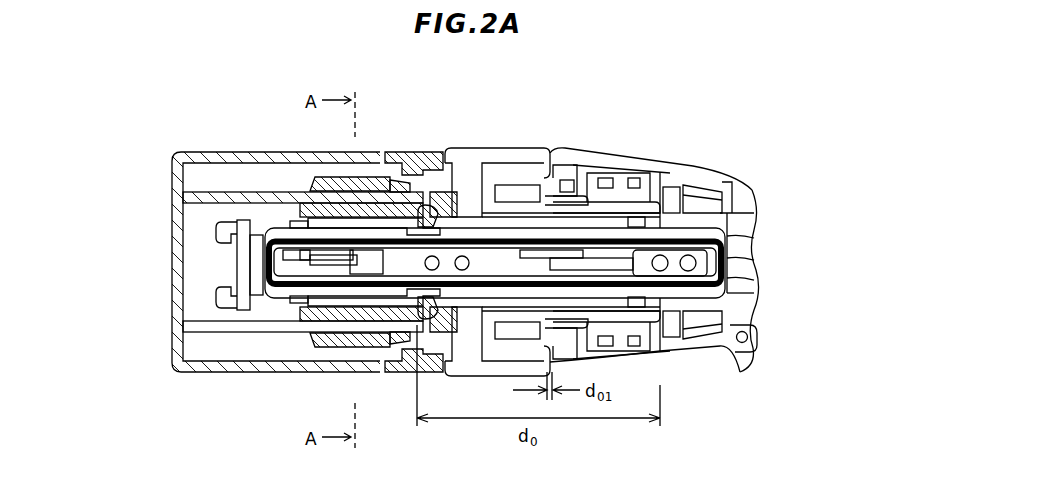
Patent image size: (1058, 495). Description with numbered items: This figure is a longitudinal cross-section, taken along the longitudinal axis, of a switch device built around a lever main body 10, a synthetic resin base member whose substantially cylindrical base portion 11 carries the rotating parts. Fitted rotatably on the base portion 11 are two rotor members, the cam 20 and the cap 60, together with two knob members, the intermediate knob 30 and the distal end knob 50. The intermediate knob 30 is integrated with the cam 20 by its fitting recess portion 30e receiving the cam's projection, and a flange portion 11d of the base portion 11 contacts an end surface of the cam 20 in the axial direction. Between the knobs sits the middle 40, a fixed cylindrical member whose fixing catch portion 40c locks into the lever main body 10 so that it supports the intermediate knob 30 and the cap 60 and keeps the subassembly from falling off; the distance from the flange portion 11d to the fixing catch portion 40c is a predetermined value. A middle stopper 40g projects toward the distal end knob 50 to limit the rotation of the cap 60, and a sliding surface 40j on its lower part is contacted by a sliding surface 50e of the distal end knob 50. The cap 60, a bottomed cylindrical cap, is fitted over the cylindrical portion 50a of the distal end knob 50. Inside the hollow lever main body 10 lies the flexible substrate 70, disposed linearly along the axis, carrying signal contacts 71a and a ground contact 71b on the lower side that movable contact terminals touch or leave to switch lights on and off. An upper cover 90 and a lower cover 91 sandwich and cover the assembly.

The lever main body 10 is at (738, 225).
The base portion 11 is at (693, 305).
The flange portion 11d is at (663, 330).
The cam 20 is at (608, 210).
The intermediate knob 30 is at (518, 148).
The fitting recess portion 30e is at (548, 197).
The middle 40 is at (418, 148).
The fixing catch portion 40c is at (428, 330).
The middle stopper 40g is at (388, 172).
The sliding surface 40j is at (400, 150).
The distal end knob 50 is at (322, 320).
The cylindrical portion 50a is at (352, 185).
The sliding surface 50e is at (362, 182).
The cap 60 is at (197, 152).
The flexible substrate 70 is at (256, 262).
The signal contacts 71a is at (345, 258).
The ground contact 71b is at (273, 297).
The upper cover 90 is at (699, 168).
The lower cover 91 is at (740, 350).